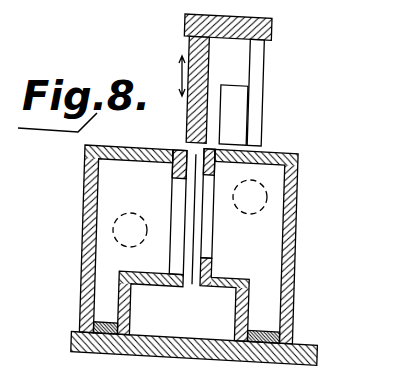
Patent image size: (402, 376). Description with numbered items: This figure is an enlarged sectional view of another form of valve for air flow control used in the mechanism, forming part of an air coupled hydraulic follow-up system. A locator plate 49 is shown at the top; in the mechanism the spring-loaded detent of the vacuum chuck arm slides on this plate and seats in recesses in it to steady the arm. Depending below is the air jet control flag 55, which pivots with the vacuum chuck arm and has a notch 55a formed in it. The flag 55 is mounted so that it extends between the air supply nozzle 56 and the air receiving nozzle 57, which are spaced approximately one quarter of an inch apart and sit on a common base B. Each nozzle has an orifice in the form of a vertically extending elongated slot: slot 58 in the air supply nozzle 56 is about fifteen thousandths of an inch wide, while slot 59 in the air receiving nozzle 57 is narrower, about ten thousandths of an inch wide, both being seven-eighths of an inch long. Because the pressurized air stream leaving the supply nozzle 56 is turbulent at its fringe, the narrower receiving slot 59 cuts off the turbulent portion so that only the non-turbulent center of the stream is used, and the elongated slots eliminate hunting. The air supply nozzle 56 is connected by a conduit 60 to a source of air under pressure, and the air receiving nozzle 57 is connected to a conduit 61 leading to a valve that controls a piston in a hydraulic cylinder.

The locator plate 49 is at (250, 19).
The air jet control flag 55 is at (253, 92).
The notch 55a is at (235, 120).
The air supply nozzle 56 is at (290, 300).
The air receiving nozzle 57 is at (82, 278).
The elongated slot 58 is at (207, 230).
The elongated slot 59 is at (177, 195).
The conduit 60 is at (265, 195).
The conduit 61 is at (140, 250).
The base B is at (142, 356).